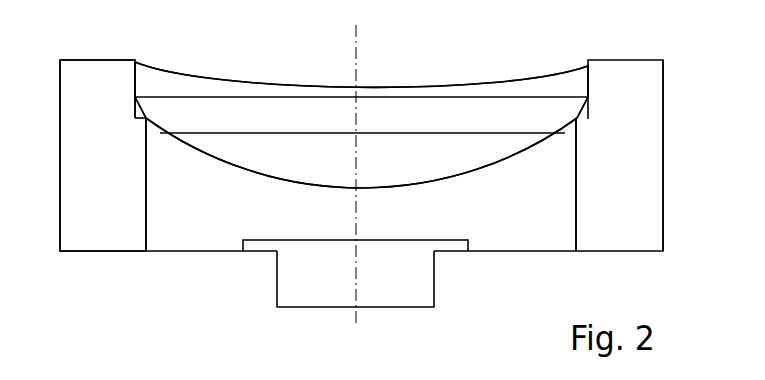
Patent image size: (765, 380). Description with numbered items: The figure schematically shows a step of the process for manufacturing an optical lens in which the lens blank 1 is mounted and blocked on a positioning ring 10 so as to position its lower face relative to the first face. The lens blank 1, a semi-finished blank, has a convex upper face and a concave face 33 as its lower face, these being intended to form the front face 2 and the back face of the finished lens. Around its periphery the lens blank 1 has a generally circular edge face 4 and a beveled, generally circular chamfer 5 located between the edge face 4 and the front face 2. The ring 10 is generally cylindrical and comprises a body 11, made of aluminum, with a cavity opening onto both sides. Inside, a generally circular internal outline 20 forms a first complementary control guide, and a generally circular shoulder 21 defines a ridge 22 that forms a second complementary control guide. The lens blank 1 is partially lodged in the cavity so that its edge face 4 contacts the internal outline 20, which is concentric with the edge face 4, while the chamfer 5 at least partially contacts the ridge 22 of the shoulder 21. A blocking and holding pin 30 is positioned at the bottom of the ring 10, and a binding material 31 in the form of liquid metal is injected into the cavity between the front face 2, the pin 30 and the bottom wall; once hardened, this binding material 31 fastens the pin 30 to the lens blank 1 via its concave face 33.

The lens blank 1 is at (242, 88).
The front face 2 is at (166, 143).
The edge face 4 is at (135, 88).
The chamfer 5 is at (138, 106).
The positioning ring 10 is at (663, 68).
The body 11 is at (646, 124).
The internal outline 20 is at (587, 67).
The shoulder 21 is at (137, 118).
The ridge 22 is at (578, 121).
The blocking and holding pin 30 is at (291, 288).
The binding material 31 is at (185, 237).
The concave face 33 is at (404, 86).